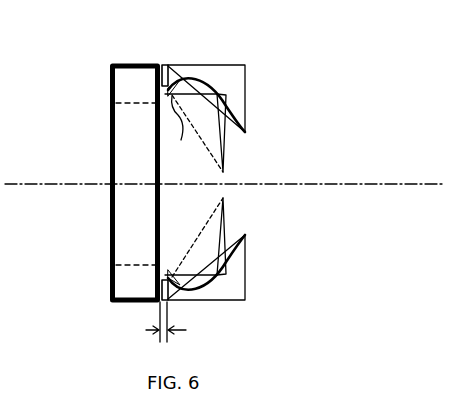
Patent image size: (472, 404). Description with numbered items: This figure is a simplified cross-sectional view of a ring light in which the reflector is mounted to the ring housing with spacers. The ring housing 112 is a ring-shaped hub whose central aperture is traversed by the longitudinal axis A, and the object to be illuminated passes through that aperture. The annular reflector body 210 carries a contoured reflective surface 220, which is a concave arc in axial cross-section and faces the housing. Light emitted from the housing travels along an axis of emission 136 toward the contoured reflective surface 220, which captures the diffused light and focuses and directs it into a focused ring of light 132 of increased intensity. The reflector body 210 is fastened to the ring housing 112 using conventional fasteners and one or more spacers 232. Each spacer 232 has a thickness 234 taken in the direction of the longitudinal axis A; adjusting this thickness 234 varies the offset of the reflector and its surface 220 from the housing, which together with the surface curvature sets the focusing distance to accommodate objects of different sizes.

The longitudinal axis A is at (325, 184).
The ring housing 112 is at (122, 93).
The focused ring of light 132 is at (228, 141).
The axis of emission 136 is at (181, 131).
The reflector body 210 is at (237, 78).
The contoured reflective surface 220 is at (247, 100).
The spacer 232 is at (165, 64).
The thickness 234 is at (183, 332).